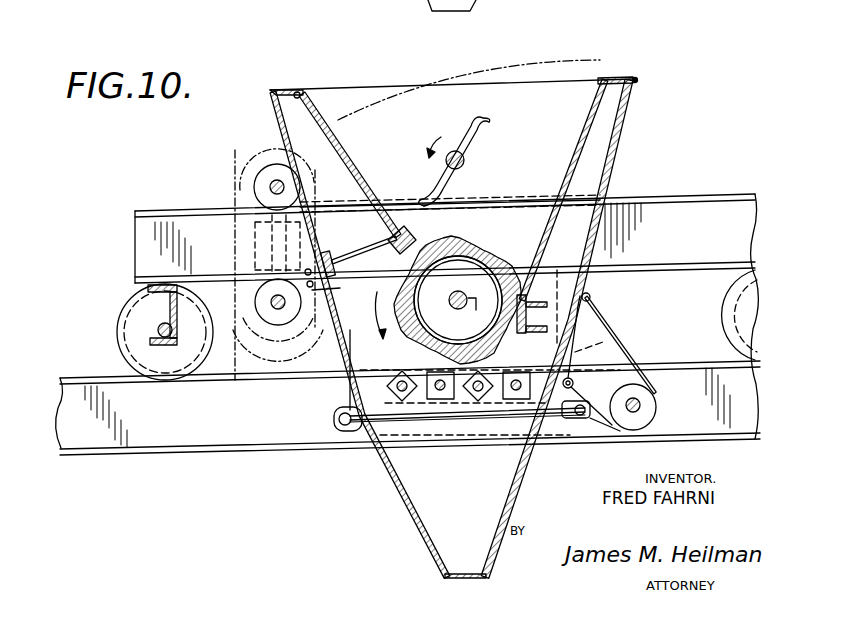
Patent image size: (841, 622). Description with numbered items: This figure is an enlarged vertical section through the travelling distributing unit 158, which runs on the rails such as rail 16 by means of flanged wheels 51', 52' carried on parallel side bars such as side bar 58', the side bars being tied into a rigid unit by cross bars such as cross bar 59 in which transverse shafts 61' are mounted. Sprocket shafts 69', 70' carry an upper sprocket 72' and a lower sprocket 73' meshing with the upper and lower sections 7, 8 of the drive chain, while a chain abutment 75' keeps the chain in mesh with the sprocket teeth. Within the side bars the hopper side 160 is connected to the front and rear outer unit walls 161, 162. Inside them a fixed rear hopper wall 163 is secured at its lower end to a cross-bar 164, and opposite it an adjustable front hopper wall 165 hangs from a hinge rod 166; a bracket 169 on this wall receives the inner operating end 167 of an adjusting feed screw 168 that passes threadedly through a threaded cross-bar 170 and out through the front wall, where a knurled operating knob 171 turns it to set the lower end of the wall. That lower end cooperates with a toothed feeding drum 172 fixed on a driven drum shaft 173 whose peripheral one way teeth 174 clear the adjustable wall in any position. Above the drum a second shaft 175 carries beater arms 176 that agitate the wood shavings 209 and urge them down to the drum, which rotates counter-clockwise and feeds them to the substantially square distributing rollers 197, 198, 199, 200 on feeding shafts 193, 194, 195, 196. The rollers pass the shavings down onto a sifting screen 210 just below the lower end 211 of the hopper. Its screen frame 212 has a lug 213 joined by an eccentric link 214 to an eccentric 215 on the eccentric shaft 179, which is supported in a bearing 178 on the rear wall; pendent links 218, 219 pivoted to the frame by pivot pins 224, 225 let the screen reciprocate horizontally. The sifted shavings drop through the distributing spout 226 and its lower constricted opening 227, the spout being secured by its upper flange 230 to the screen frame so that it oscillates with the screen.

The upper chain section 7 is at (300, 214).
The lower chain section 8 is at (300, 280).
The rail 16 is at (210, 440).
The flanged wheel 51' is at (140, 332).
The flanged wheel 52' is at (721, 315).
The side bar 58' is at (446, 308).
The cross bar 59 is at (185, 337).
The transverse shaft 61' is at (150, 315).
The sprocket shaft 69' is at (249, 187).
The sprocket shaft 70' is at (262, 320).
The upper sprocket 72' is at (267, 255).
The lower sprocket 73' is at (278, 344).
The chain abutment 75' is at (254, 243).
The unit 158 is at (634, 79).
The hopper side 160 is at (367, 96).
The front outer unit wall 161 is at (267, 104).
The rear outer unit wall 162 is at (628, 110).
The fixed rear hopper wall 163 is at (594, 116).
The cross-bar 164 is at (590, 297).
The adjustable front hopper wall 165 is at (328, 142).
The hinge rod 166 is at (296, 88).
The inner operating end 167 is at (410, 206).
The adjusting feed screw 168 is at (390, 234).
The bracket 169 is at (393, 252).
The threaded cross-bar 170 is at (324, 248).
The knurled operating knob 171 is at (345, 314).
The toothed feeding drum 172 is at (504, 262).
The drum shaft 173 is at (459, 313).
The peripheral one way teeth 174 is at (464, 244).
The second shaft 175 is at (463, 160).
The beater arms 176 is at (486, 122).
The bearing 178 is at (598, 330).
The eccentric shaft 179 is at (640, 402).
The feeding shaft 193 is at (402, 372).
The feeding shaft 194 is at (437, 422).
The feeding shaft 195 is at (480, 400).
The feeding shaft 196 is at (517, 372).
The square distributing roller 197 is at (407, 400).
The square distributing roller 198 is at (443, 398).
The square distributing roller 199 is at (475, 422).
The square distributing roller 200 is at (517, 425).
The wood shavings 209 is at (560, 64).
The sifting screen 210 is at (475, 425).
The lower end of hopper structure 211 is at (373, 427).
The screen frame 212 is at (533, 460).
The lug 213 is at (578, 418).
The eccentric link 214 is at (598, 434).
The eccentric 215 is at (648, 411).
The pendent link 218 is at (340, 393).
The pendent link 219 is at (610, 343).
The pivot pin 224 is at (338, 417).
The pivot pin 225 is at (573, 382).
The distributing spout 226 is at (422, 523).
The lower constricted opening 227 is at (447, 578).
The upper flange 230 is at (340, 437).